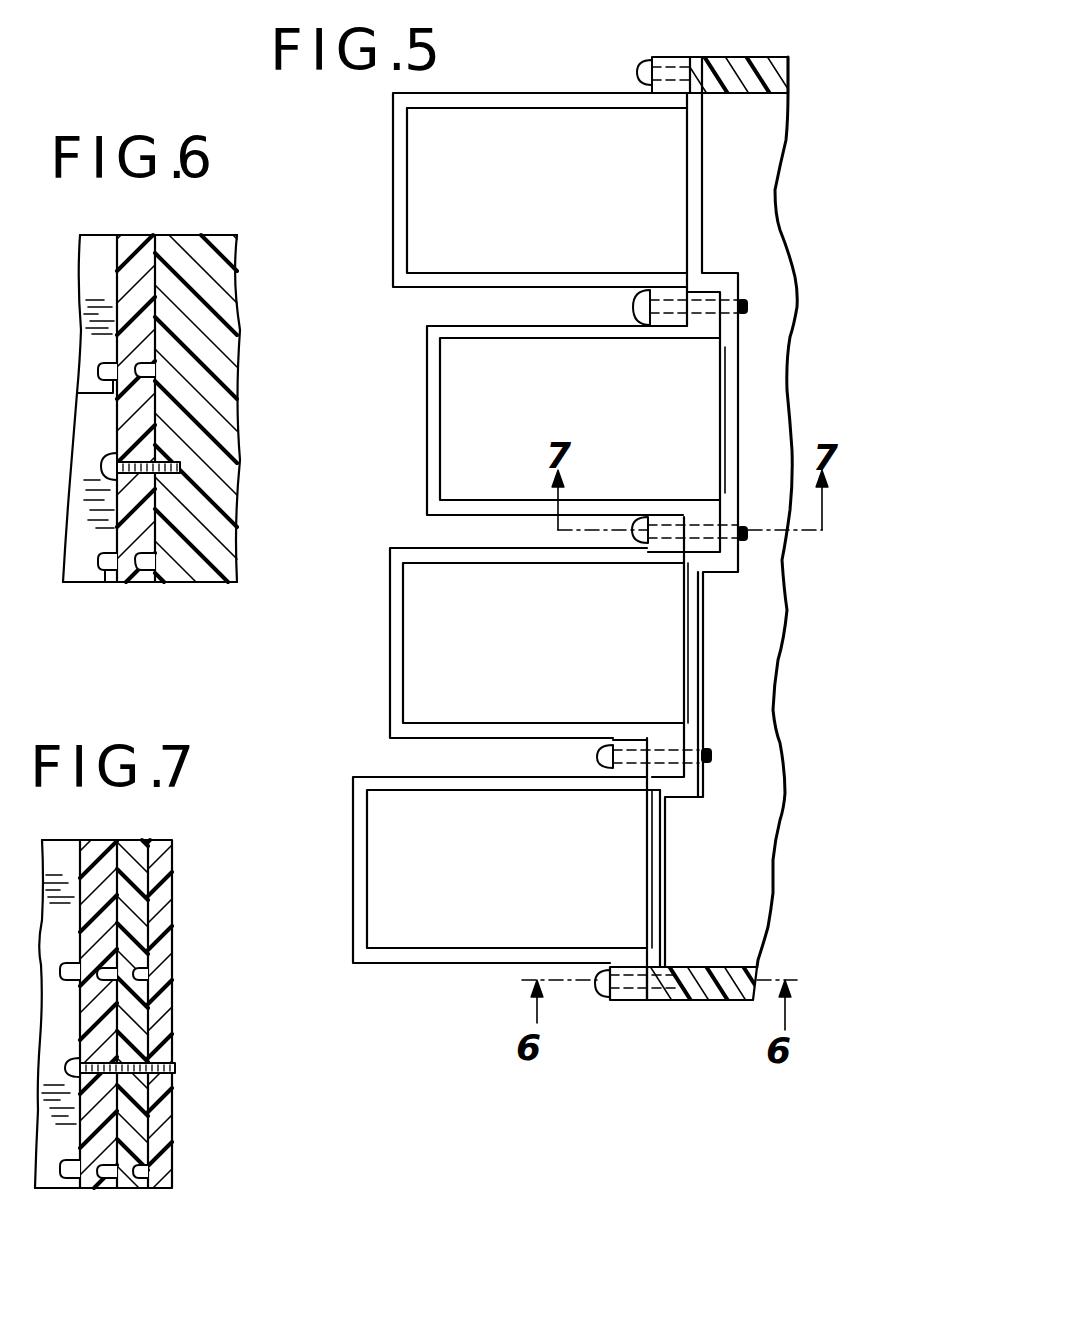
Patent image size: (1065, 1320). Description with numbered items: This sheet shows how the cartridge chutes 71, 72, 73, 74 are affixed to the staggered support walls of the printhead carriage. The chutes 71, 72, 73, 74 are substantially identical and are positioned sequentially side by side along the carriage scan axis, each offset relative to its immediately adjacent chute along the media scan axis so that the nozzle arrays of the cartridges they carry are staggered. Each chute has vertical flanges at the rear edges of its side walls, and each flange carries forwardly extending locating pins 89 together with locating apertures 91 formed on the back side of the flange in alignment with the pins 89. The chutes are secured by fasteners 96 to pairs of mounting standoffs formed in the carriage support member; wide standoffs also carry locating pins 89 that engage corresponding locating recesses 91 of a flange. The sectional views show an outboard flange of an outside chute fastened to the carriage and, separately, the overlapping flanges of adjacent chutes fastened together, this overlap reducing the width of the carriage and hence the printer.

In FIG. 5, the cartridge chute 71 is at (352, 915).
In FIG. 5, the cartridge chute 72 is at (390, 688).
In FIG. 5, the cartridge chute 73 is at (427, 455).
In FIG. 5, the cartridge chute 74 is at (392, 240).
In FIG. 5, the mounting screw 96 is at (597, 757).
In FIG. 6, the locating pin 89 is at (99, 364).
In FIG. 6, the locating aperture 91 is at (77, 393).